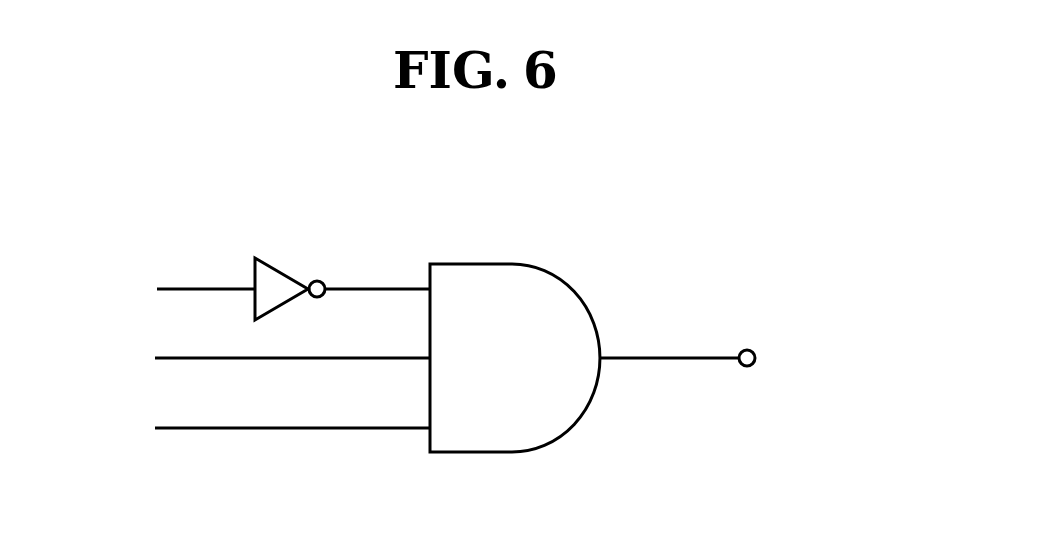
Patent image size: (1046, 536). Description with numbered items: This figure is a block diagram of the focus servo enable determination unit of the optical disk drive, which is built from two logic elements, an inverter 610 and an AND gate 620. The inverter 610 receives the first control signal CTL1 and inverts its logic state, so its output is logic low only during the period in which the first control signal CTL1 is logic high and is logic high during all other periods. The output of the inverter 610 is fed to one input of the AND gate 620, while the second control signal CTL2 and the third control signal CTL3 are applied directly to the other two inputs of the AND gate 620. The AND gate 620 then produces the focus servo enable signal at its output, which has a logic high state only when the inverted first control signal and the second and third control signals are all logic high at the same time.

The inverter 610 is at (283, 272).
The AND gate 620 is at (572, 290).
The first control signal CTL1 is at (159, 289).
The second control signal CTL2 is at (246, 359).
The third control signal CTL3 is at (246, 431).